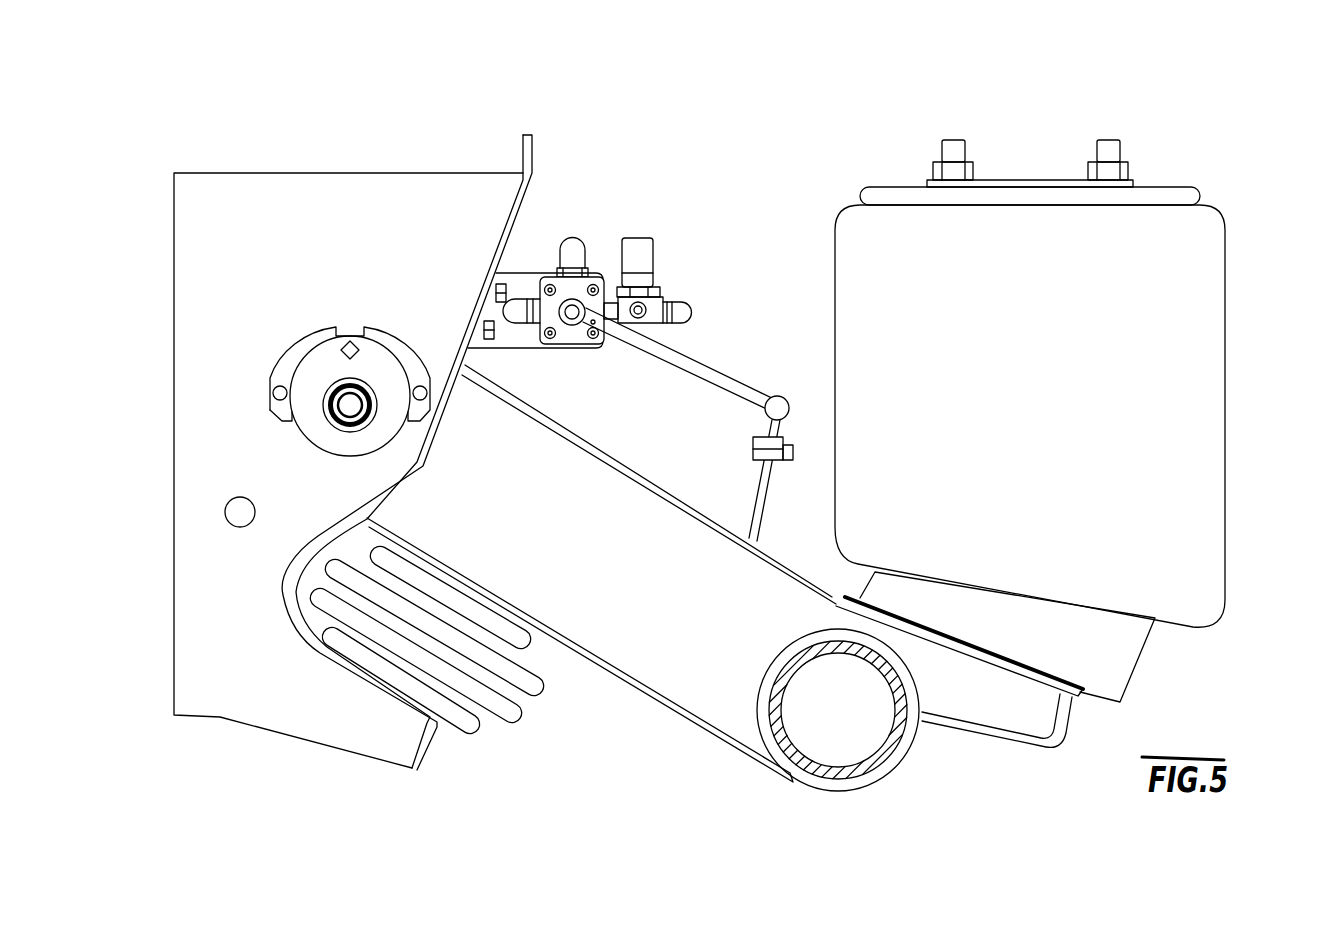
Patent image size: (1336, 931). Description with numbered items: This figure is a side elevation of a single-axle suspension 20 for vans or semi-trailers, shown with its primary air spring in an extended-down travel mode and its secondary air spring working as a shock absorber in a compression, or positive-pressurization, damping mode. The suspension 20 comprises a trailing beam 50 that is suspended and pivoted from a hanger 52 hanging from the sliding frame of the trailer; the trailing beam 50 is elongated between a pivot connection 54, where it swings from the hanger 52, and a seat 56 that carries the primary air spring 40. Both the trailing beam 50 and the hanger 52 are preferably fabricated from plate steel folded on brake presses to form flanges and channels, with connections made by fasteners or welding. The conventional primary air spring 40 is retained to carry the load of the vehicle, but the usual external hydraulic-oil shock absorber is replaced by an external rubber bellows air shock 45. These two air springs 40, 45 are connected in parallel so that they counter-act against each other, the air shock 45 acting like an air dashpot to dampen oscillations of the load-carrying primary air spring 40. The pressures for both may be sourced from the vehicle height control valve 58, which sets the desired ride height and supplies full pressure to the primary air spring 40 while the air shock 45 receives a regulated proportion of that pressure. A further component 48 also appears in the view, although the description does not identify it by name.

The suspension 20 is at (984, 342).
The primary air spring 40 is at (860, 267).
The air shock 45 is at (535, 702).
The air pipe 48 is at (896, 767).
The trailing beam 50 is at (682, 693).
The hanger 52 is at (265, 190).
The pivot connection 54 is at (325, 397).
The seat 56 is at (1017, 667).
The vehicle height control valve 58 is at (600, 276).